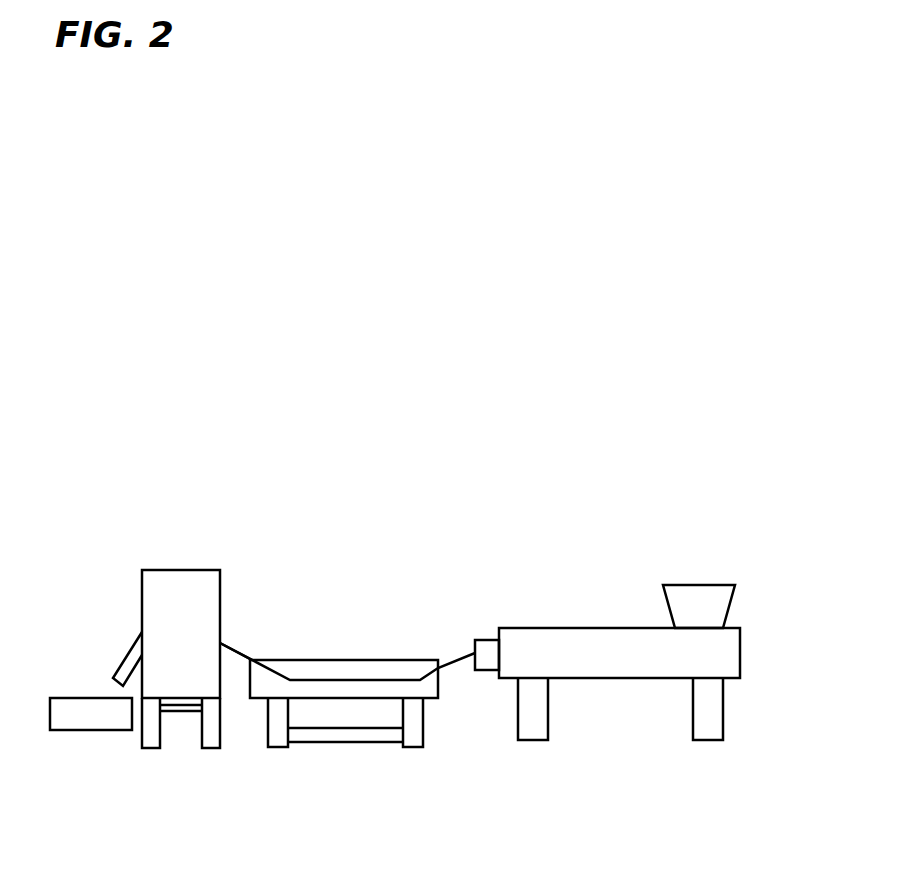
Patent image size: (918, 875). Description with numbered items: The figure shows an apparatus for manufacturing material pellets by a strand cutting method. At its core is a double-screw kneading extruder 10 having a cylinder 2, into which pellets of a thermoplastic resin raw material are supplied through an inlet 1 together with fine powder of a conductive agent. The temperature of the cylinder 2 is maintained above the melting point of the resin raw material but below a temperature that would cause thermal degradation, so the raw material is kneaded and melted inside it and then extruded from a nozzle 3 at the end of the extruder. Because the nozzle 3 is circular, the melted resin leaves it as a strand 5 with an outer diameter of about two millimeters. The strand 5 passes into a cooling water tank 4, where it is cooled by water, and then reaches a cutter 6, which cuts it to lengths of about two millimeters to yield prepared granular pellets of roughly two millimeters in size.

The double-screw kneading extruder 10 is at (444, 518).
The inlet 1 is at (695, 588).
The cylinder 2 is at (582, 635).
The nozzle 3 is at (485, 635).
The cooling water tank 4 is at (393, 668).
The strand 5 is at (237, 652).
The cutter 6 is at (183, 578).